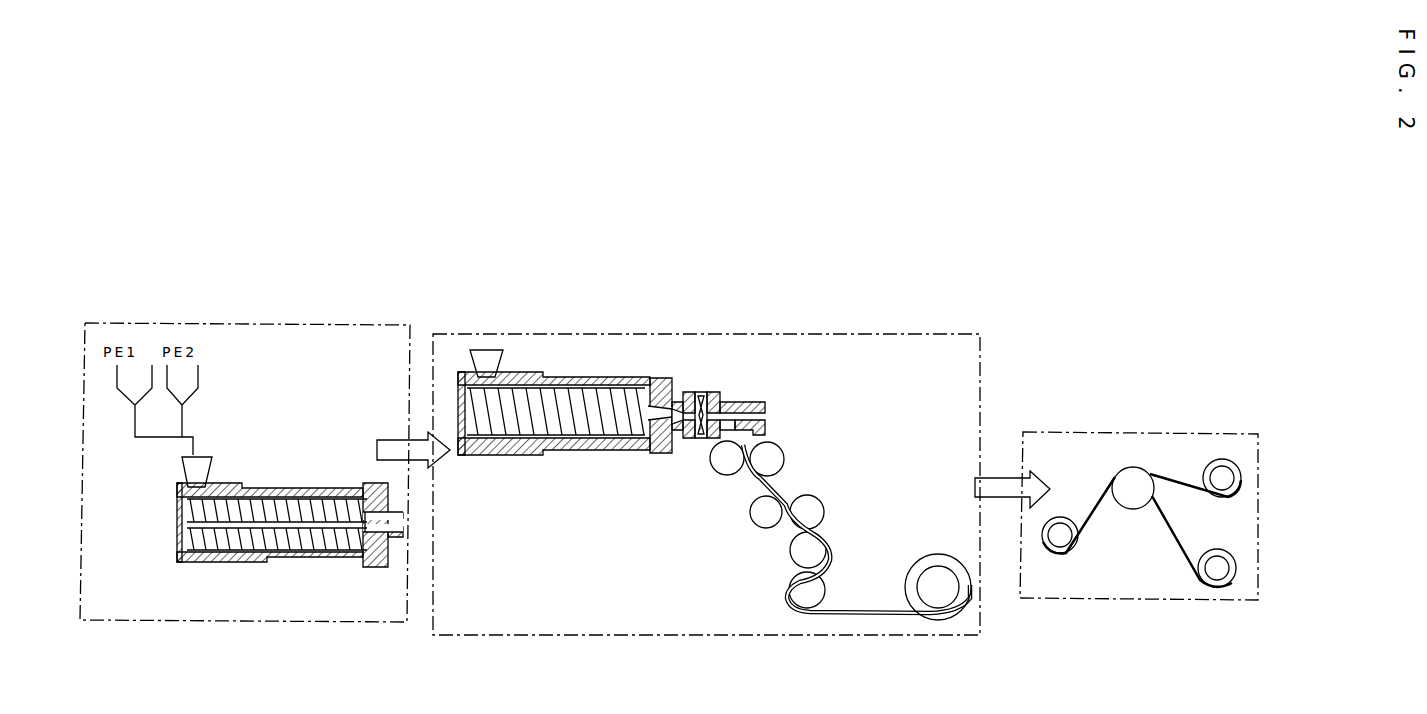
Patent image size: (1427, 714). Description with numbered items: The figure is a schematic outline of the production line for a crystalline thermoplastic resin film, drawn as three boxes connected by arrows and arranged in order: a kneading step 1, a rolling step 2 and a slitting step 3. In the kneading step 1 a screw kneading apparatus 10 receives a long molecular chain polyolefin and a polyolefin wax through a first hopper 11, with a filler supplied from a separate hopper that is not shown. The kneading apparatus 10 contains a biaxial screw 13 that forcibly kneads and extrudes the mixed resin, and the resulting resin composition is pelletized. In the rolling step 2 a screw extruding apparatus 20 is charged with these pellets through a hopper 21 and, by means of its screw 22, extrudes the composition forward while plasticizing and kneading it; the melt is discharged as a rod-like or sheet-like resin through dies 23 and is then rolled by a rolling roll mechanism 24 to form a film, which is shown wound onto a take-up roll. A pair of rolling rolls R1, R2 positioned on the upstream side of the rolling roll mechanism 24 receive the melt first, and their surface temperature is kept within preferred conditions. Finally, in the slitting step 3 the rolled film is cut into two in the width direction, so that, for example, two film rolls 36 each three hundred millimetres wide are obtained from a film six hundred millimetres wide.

The kneading step 1 is at (358, 320).
The rolling step 2 is at (760, 333).
The slitting step 3 is at (853, 612).
The screw kneading apparatus 10 is at (170, 549).
The first hopper 11 is at (180, 470).
The biaxial screw 13 is at (327, 520).
The screw extruding apparatus 20 is at (591, 381).
The hopper 21 is at (497, 348).
The screw 22 is at (588, 428).
The dies 23 is at (708, 397).
The rolling roll mechanism 24 is at (838, 553).
The rolling roll R1 is at (712, 463).
The rolling roll R2 is at (761, 443).
The film rolls 36 is at (1232, 545).